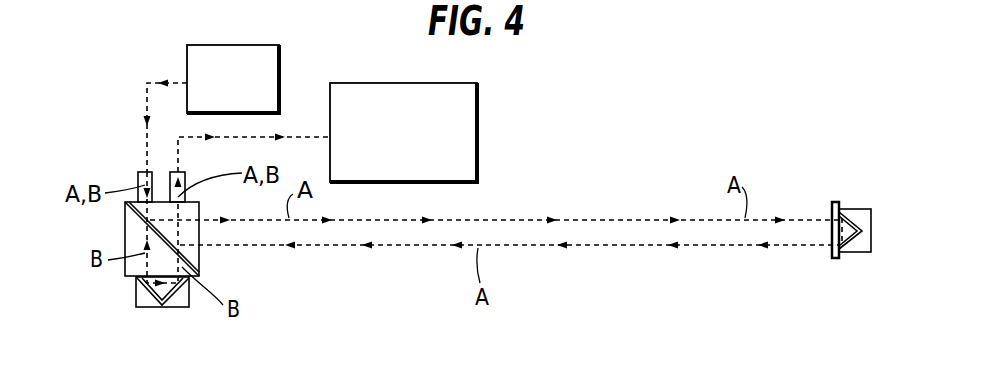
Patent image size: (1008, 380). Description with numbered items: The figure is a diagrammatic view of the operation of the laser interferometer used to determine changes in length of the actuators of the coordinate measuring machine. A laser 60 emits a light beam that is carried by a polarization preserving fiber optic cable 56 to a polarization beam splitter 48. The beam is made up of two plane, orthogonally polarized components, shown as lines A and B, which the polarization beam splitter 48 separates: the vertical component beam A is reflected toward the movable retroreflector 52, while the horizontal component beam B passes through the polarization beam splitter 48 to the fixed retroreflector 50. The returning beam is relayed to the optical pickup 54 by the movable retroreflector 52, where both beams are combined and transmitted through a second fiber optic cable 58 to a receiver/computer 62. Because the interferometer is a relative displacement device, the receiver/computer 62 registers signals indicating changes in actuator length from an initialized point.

The polarization beam splitter 48 is at (125, 222).
The fixed retroreflector 50 is at (155, 308).
The movable retroreflector 52 is at (852, 210).
The optical pickup 54 is at (199, 208).
The fiber optic cable 56 is at (145, 173).
The fiber optic cable 58 is at (178, 173).
The laser 60 is at (246, 105).
The receiver/computer 62 is at (416, 172).